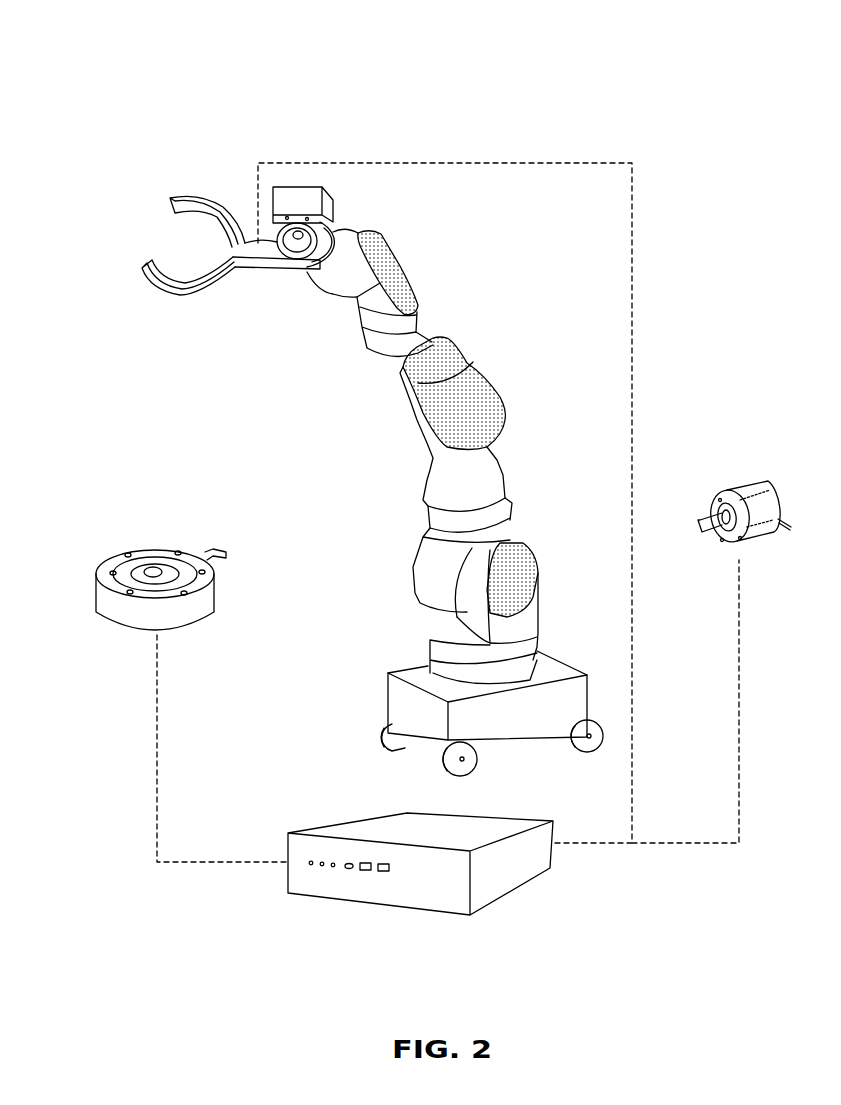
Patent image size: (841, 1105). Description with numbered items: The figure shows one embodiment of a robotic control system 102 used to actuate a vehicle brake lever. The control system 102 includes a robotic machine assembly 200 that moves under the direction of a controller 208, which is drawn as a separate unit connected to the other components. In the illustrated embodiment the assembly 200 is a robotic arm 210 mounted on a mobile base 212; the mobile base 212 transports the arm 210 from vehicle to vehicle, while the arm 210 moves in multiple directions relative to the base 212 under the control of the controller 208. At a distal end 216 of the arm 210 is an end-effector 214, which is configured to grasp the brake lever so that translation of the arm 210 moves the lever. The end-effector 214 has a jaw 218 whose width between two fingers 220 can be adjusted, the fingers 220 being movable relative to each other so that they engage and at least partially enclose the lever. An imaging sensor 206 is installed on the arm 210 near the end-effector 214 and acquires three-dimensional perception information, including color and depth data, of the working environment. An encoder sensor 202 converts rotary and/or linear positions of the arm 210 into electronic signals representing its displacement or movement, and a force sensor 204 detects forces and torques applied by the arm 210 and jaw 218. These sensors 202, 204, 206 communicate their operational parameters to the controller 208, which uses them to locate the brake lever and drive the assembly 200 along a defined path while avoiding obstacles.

The robotic control system 102 is at (580, 66).
The robotic machine assembly 200 is at (372, 458).
The encoder sensor 202 is at (744, 478).
The force sensor 204 is at (155, 546).
The imaging sensor 206 is at (300, 187).
The controller 208 is at (512, 897).
The robotic arm 210 is at (395, 270).
The mobile base 212 is at (395, 705).
The end-effector 214 is at (203, 196).
The distal end 216 is at (125, 238).
The jaw 218 is at (180, 197).
The fingers 220 is at (172, 205).